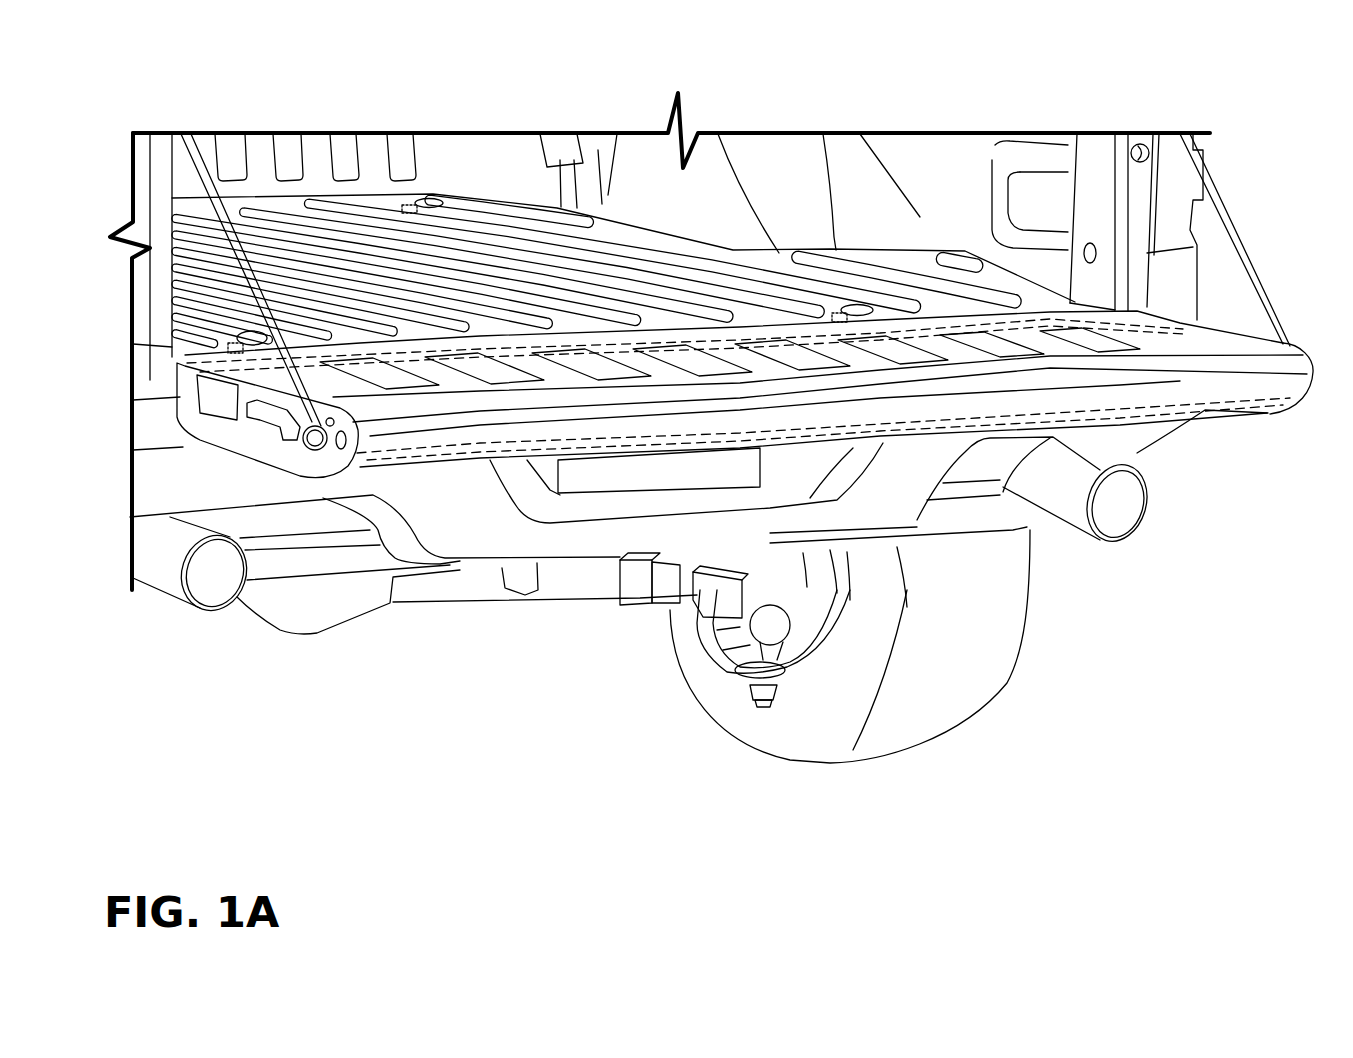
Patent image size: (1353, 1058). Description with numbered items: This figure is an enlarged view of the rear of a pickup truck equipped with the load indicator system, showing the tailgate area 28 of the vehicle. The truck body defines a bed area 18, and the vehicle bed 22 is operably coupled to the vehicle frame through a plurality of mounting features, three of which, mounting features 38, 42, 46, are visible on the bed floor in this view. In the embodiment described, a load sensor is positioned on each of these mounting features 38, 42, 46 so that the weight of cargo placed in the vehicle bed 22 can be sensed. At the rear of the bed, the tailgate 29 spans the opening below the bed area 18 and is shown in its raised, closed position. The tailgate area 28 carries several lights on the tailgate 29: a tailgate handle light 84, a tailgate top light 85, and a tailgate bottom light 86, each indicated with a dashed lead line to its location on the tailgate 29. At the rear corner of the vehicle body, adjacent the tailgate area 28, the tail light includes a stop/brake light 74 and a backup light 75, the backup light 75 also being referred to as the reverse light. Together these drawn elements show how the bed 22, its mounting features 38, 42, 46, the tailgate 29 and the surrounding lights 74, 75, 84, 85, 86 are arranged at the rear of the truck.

The bed area 18 is at (760, 166).
The vehicle bed 22 is at (512, 292).
The mounting feature 38 is at (428, 196).
The mounting feature 46 is at (862, 306).
The mounting feature 42 is at (240, 337).
The stop/brake light 74 is at (1203, 167).
The backup light 75 is at (1207, 142).
The tailgate area 28 is at (1160, 337).
The tailgate 29 is at (1195, 373).
The tailgate bottom light 86 is at (263, 393).
The tailgate top light 85 is at (433, 470).
The tailgate handle light 84 is at (760, 378).